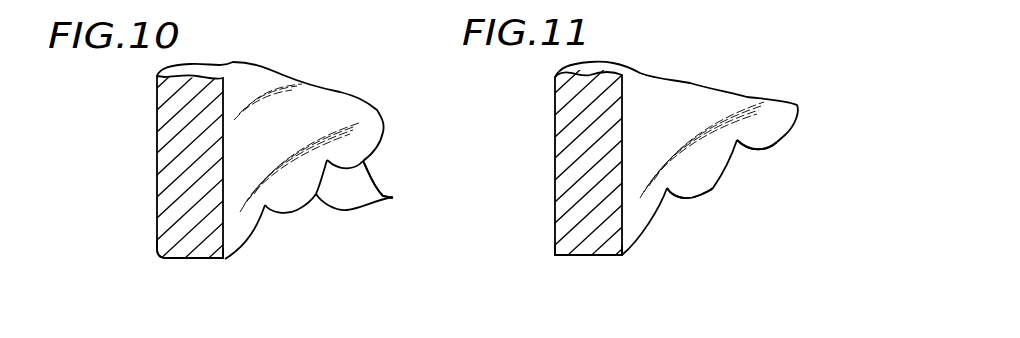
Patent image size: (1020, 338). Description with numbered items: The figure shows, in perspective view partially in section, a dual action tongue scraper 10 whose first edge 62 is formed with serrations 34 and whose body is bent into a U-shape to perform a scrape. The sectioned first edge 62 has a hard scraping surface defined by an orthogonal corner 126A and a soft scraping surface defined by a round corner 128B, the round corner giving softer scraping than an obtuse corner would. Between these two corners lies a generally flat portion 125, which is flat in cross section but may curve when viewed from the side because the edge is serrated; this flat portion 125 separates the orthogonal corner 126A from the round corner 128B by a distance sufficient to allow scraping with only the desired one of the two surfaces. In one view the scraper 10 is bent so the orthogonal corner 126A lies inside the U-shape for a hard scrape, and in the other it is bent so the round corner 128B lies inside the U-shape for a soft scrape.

In FIG. 10, the dual action tongue scraper 10 is at (135, 196).
In FIG. 11, the dual action tongue scraper 10 is at (528, 152).
In FIG. 10, the serrations 34 is at (393, 198).
In FIG. 11, the serrations 34 is at (777, 142).
In FIG. 10, the first edge 62 is at (162, 273).
In FIG. 11, the first edge 62 is at (546, 273).
In FIG. 10, the generally flat portion 125 is at (193, 259).
In FIG. 11, the generally flat portion 125 is at (583, 256).
In FIG. 10, the orthogonal corner 126A is at (225, 259).
In FIG. 11, the orthogonal corner 126A is at (556, 256).
In FIG. 10, the round corner 128B is at (163, 257).
In FIG. 11, the round corner 128B is at (622, 256).